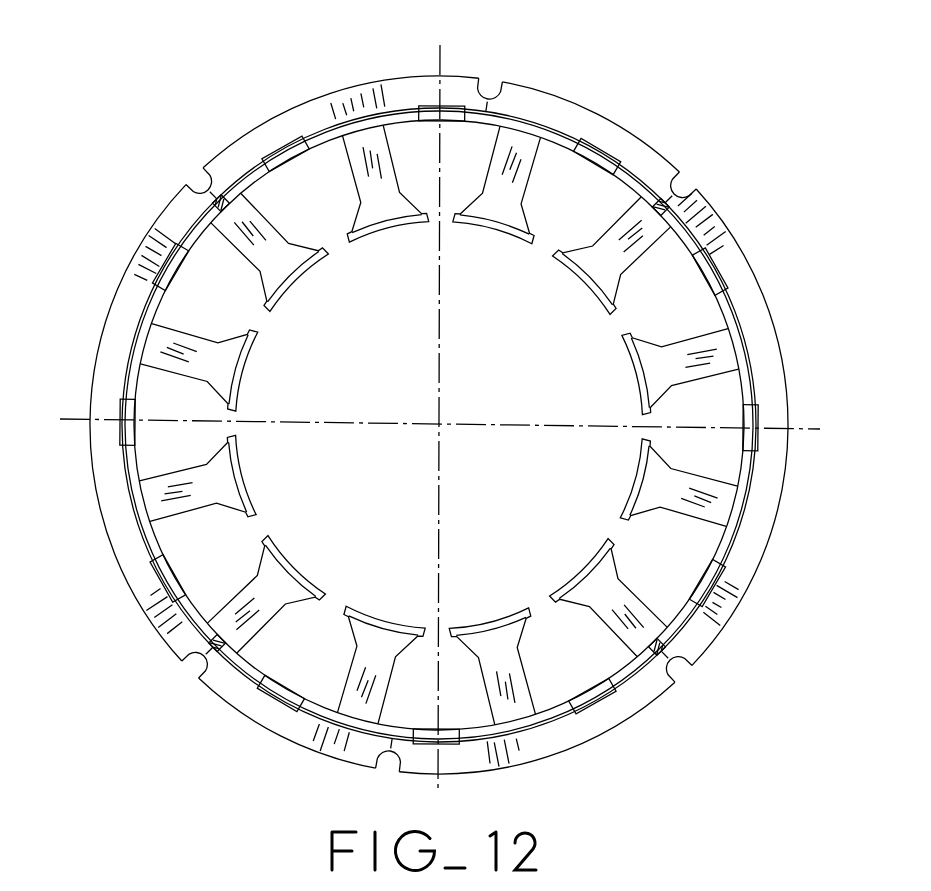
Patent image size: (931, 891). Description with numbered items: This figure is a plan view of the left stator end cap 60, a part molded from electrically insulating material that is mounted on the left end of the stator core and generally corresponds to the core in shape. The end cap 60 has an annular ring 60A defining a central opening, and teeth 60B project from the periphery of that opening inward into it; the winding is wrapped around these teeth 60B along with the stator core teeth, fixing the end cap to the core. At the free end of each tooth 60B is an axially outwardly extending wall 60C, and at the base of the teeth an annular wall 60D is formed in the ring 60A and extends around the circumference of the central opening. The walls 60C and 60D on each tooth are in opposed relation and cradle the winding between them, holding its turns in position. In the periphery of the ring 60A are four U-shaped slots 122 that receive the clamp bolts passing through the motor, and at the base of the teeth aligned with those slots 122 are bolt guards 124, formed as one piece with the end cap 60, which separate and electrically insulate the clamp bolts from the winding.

The left end cap 60 is at (698, 105).
The annular ring 60A is at (738, 248).
The teeth 60B is at (493, 236).
The axially outwardly extending wall 60C is at (300, 276).
The annular wall 60D is at (325, 133).
The U-shaped slots 122 is at (199, 170).
The bolt guards 124 is at (228, 197).